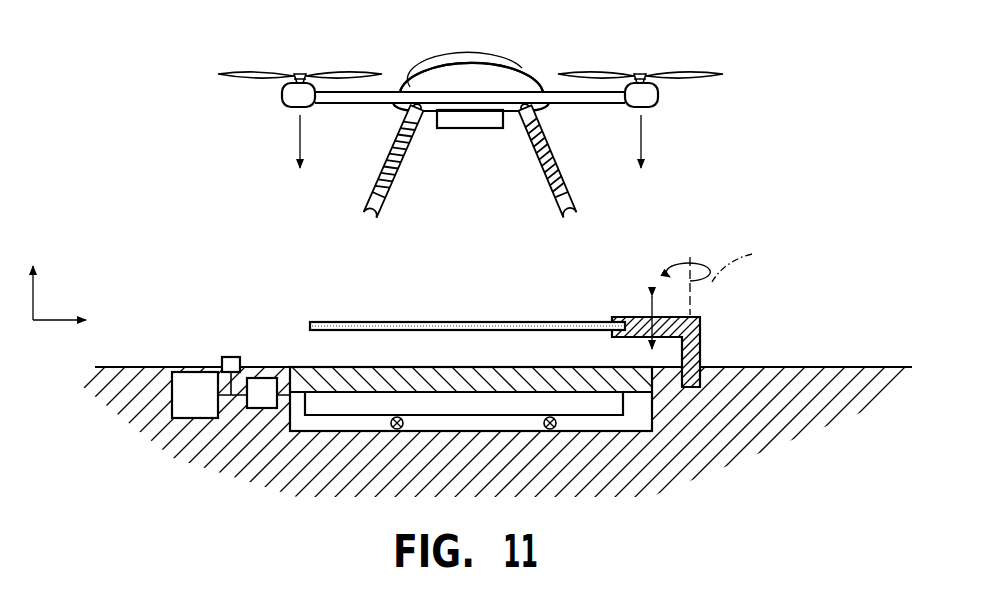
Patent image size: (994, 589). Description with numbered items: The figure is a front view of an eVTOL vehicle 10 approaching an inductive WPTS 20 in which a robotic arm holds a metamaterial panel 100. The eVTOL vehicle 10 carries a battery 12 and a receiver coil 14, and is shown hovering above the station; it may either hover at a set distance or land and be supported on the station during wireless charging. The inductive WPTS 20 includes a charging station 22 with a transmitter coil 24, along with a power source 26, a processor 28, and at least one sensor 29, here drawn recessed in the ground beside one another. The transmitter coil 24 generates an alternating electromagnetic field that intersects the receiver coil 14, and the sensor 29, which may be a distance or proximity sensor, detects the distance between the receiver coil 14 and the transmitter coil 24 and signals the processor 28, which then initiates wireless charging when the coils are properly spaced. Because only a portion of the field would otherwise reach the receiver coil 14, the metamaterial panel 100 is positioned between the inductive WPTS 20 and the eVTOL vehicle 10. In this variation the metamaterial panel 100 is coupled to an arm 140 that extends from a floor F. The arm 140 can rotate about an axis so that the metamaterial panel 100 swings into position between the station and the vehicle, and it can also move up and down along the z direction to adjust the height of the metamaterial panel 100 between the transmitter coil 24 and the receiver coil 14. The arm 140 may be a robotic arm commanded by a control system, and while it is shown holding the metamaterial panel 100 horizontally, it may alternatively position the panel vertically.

The eVTOL vehicle 10 is at (700, 41).
The battery 12 is at (488, 108).
The receiver coil 14 is at (458, 128).
The inductive WPTS 20 is at (465, 394).
The charging station 22 is at (829, 473).
The transmitter coil 24 is at (615, 424).
The power source 26 is at (181, 418).
The processor 28 is at (246, 408).
The sensor 29 is at (231, 357).
The metamaterial panel 100 is at (340, 318).
The arm 140 is at (700, 340).
The floor F is at (856, 367).